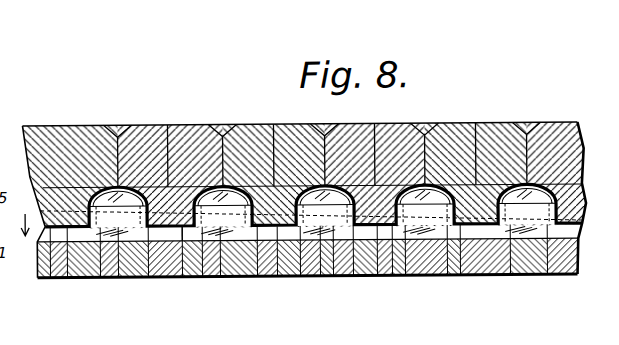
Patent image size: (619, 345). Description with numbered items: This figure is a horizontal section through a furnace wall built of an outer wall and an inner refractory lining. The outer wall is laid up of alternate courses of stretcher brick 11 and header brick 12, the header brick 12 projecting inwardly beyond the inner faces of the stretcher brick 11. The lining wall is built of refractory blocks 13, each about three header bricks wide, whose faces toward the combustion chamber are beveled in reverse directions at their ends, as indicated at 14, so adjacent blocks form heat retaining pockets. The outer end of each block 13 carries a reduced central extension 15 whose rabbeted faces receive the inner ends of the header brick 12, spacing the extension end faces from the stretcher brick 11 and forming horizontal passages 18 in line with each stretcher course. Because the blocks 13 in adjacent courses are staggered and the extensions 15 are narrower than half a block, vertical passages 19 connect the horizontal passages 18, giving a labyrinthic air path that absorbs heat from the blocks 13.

The stretcher brick 11 is at (282, 278).
The header brick 12 is at (365, 232).
The refractory lining block 13 is at (168, 132).
The beveled end faces 14 is at (125, 129).
The reduced central extension 15 is at (113, 193).
The horizontal passages 18 is at (182, 233).
The vertical passages 19 is at (218, 193).